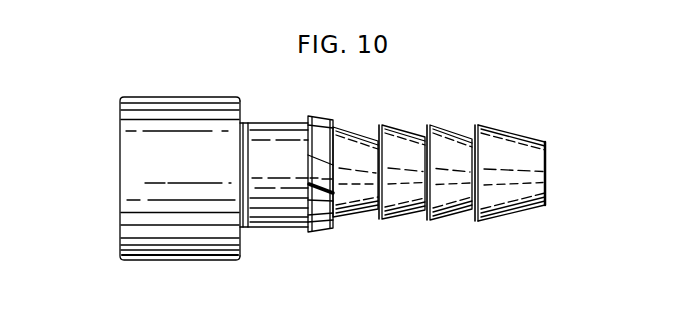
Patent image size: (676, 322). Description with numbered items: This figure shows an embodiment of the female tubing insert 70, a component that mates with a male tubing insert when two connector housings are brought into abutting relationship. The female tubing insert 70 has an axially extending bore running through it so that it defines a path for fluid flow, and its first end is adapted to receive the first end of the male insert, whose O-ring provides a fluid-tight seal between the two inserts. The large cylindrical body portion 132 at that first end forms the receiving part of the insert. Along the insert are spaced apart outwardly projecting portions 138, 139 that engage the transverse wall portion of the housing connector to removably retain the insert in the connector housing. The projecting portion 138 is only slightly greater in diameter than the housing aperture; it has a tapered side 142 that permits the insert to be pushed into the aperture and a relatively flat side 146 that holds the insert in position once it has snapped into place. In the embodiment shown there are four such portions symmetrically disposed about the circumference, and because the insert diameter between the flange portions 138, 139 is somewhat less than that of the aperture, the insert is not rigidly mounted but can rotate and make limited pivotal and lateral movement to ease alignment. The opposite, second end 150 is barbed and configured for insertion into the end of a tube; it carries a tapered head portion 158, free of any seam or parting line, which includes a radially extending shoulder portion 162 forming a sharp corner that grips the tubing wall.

The female tubing insert 70 is at (108, 109).
The cylindrical body 132 is at (147, 103).
The outwardly projecting portion 139 is at (237, 100).
The relatively flat side 146 is at (308, 231).
The tapered side 142 is at (318, 233).
The outwardly projecting portion 138 is at (322, 168).
The second end 150 is at (490, 155).
The radially extending shoulder portion 162 is at (474, 219).
The tapered head portion 158 is at (513, 213).